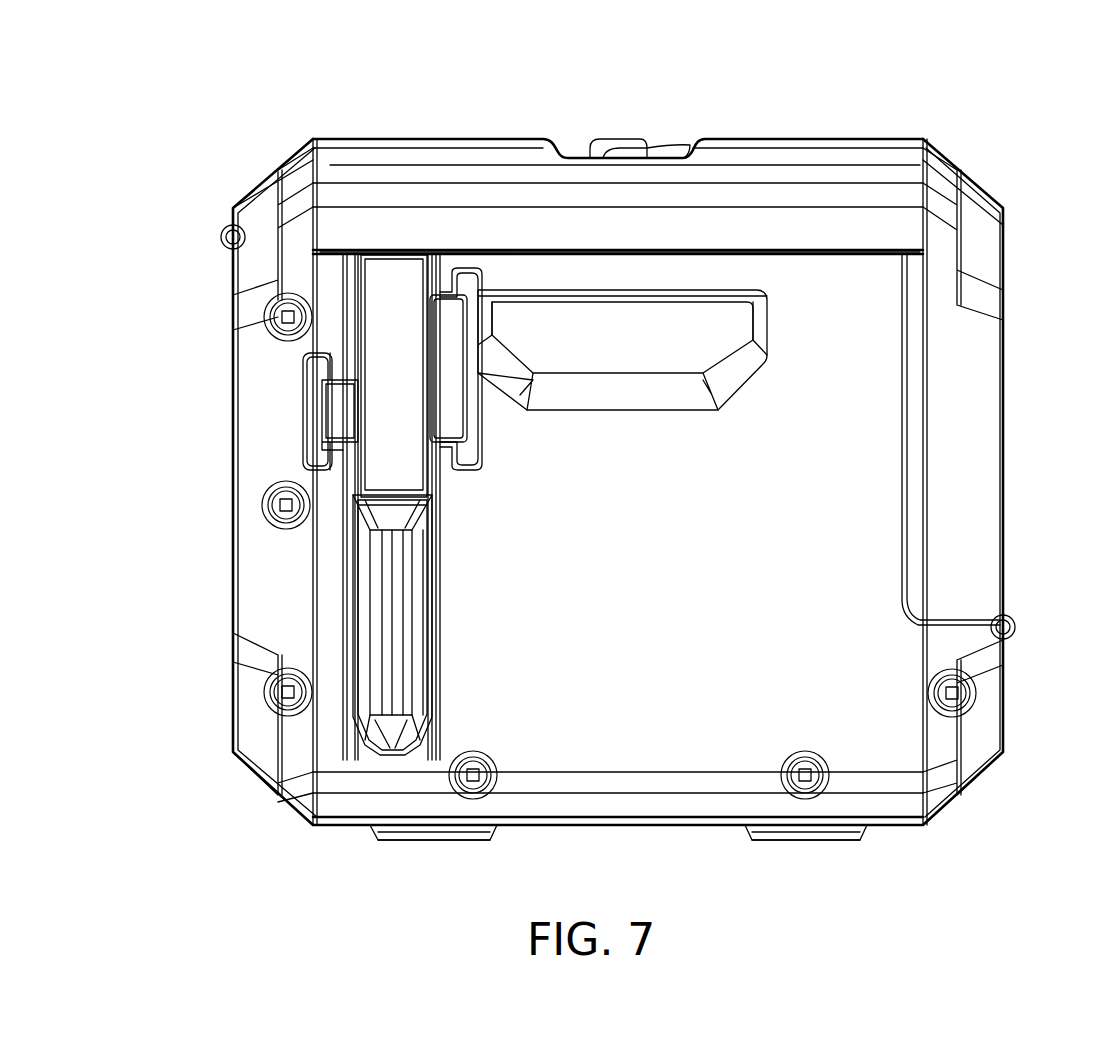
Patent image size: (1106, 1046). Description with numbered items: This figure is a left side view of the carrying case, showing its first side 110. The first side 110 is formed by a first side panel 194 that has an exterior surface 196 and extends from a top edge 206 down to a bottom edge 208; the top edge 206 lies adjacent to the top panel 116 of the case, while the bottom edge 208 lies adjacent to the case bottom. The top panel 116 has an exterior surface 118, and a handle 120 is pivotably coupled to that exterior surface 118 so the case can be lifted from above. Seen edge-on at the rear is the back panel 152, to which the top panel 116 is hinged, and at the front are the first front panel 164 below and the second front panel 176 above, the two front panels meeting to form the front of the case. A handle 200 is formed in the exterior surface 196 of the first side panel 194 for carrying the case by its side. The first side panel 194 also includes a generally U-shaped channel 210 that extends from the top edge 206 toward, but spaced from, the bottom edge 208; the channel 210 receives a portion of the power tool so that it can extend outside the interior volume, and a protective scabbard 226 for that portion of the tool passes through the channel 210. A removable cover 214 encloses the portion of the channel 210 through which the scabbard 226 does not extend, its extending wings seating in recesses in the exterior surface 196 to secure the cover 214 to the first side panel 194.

The first side 110 is at (238, 134).
The top panel 116 is at (800, 160).
The exterior surface 118 is at (790, 232).
The handle 120 is at (661, 140).
The back panel 152 is at (258, 733).
The first front panel 164 is at (983, 729).
The second front panel 176 is at (966, 490).
The first side panel 194 is at (866, 429).
The exterior surface 196 is at (678, 620).
The handle 200 is at (590, 330).
The top edge 206 is at (466, 248).
The bottom edge 208 is at (660, 840).
The channel 210 is at (356, 504).
The cover 214 is at (366, 406).
The scabbard 226 is at (366, 606).